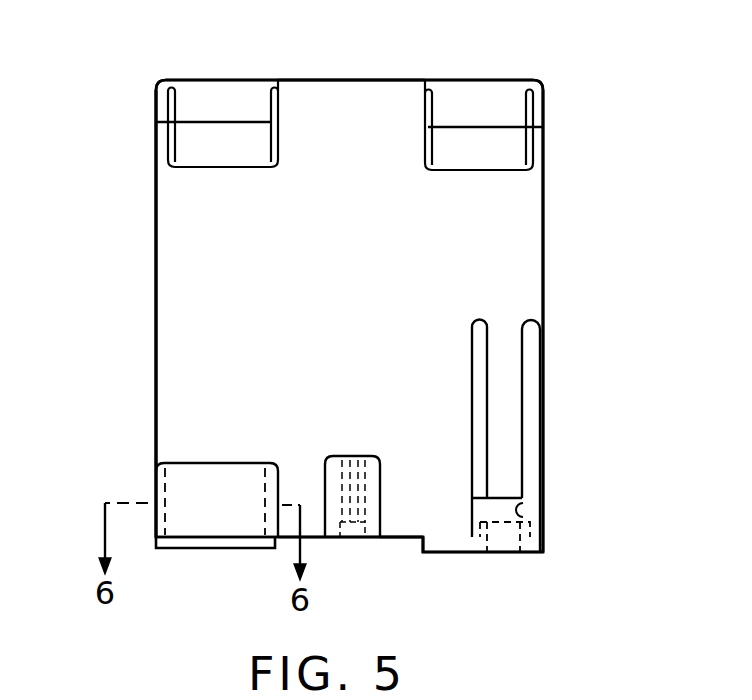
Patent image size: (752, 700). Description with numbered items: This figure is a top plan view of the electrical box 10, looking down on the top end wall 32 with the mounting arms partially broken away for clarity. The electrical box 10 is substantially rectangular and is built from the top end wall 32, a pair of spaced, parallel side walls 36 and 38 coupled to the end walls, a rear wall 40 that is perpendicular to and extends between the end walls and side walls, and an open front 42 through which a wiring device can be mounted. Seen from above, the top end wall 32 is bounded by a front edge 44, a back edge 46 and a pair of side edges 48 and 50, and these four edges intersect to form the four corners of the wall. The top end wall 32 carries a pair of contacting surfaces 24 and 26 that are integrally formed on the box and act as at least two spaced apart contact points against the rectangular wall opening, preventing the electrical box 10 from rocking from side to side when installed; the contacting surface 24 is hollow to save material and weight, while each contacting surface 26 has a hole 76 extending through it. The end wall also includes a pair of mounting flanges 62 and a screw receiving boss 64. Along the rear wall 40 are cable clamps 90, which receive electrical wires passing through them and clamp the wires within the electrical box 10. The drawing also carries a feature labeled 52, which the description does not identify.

The electrical box 10 is at (568, 201).
The contacting surface 24 is at (243, 463).
The contacting surface 26 is at (468, 537).
The top end wall 32 is at (352, 316).
The side wall 36 is at (554, 278).
The side wall 38 is at (147, 294).
The rear wall 40 is at (400, 80).
The open front 42 is at (382, 555).
The front edge 44 is at (312, 541).
The back edge 46 is at (320, 80).
The side edge 48 is at (546, 310).
The side edge 50 is at (155, 365).
The bottom edge segment 52 is at (405, 537).
The mounting flange 62 is at (206, 548).
The screw receiving boss 64 is at (381, 472).
The hole 76 is at (525, 512).
The cable clamp 90 is at (230, 168).